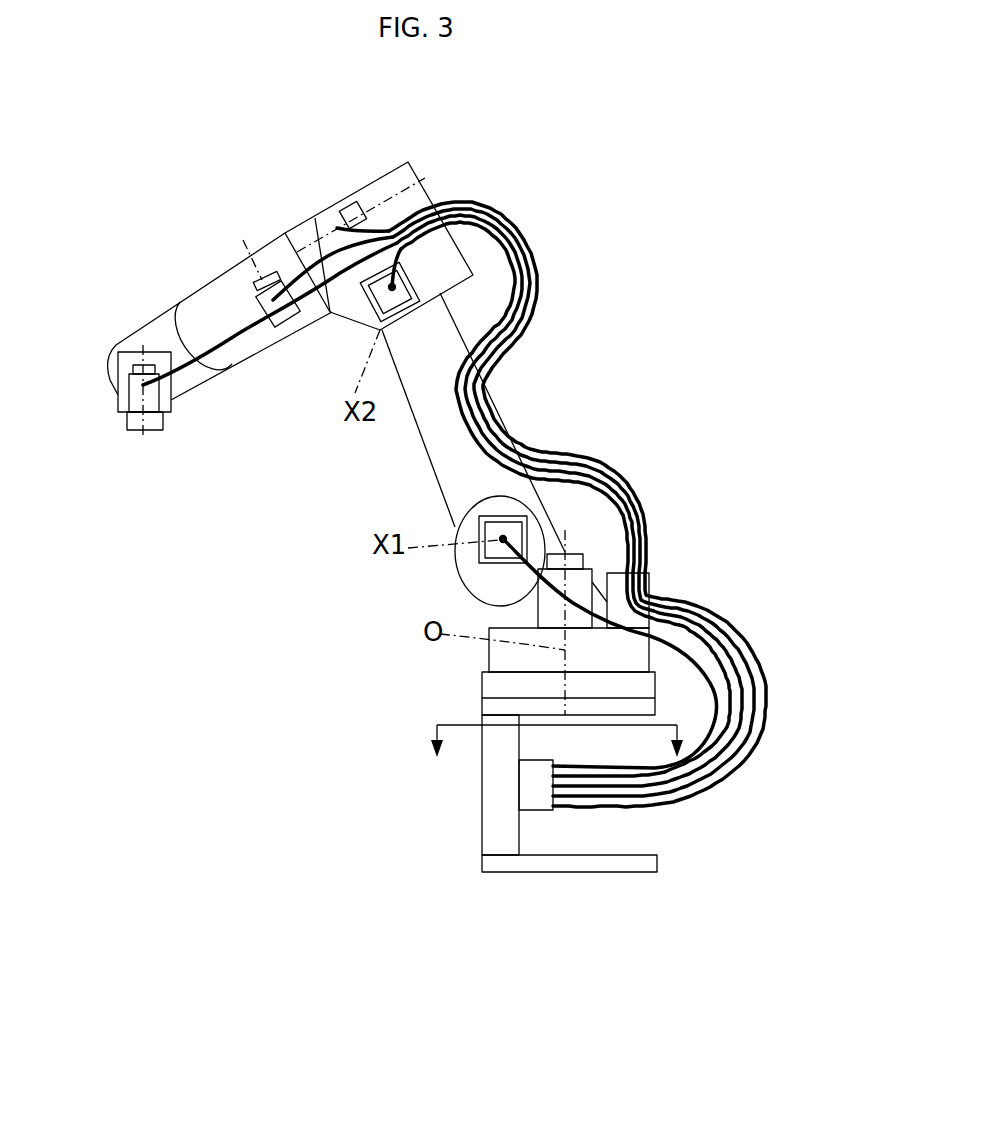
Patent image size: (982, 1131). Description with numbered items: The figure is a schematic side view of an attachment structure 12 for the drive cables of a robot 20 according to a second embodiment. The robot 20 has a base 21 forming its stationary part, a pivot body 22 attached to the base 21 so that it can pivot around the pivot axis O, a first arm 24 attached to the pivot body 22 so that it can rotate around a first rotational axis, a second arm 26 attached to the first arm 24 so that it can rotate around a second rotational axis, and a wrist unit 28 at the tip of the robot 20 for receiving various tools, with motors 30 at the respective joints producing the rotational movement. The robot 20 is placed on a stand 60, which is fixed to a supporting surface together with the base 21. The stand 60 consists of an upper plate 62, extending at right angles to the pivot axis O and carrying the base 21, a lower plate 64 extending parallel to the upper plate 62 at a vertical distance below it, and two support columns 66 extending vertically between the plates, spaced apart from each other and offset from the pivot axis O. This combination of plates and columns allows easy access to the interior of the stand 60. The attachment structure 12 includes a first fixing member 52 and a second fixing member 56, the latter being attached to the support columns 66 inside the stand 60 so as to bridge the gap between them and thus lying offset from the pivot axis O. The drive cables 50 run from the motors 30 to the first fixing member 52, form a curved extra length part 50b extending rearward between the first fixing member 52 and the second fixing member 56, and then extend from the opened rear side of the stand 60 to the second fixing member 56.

The attachment structure 12 is at (455, 683).
The robot 20 is at (374, 460).
The base 21 is at (489, 662).
The pivot body 22 is at (457, 567).
The first arm 24 is at (405, 431).
The second arm 26 is at (430, 193).
The wrist unit 28 is at (120, 443).
The motor 30 is at (336, 210).
The drive cables 50 is at (593, 485).
The extra length part 50b is at (767, 687).
The first fixing member 52 is at (649, 574).
The second fixing member 56 is at (540, 812).
The stand 60 is at (460, 778).
The upper plate 62 is at (482, 708).
The lower plate 64 is at (557, 873).
The support columns 66 is at (482, 812).